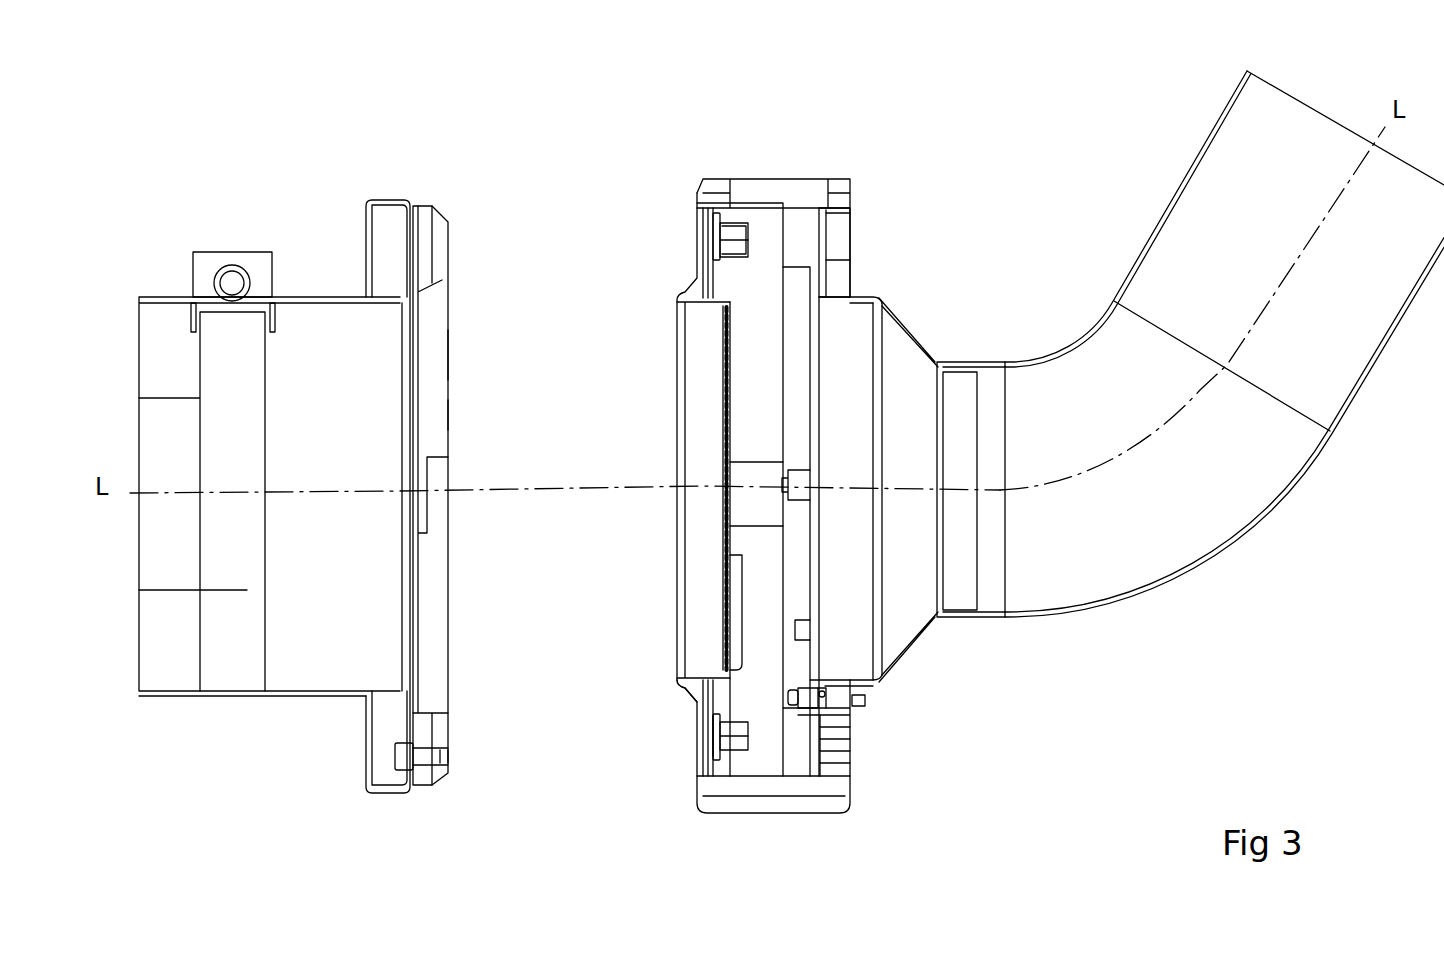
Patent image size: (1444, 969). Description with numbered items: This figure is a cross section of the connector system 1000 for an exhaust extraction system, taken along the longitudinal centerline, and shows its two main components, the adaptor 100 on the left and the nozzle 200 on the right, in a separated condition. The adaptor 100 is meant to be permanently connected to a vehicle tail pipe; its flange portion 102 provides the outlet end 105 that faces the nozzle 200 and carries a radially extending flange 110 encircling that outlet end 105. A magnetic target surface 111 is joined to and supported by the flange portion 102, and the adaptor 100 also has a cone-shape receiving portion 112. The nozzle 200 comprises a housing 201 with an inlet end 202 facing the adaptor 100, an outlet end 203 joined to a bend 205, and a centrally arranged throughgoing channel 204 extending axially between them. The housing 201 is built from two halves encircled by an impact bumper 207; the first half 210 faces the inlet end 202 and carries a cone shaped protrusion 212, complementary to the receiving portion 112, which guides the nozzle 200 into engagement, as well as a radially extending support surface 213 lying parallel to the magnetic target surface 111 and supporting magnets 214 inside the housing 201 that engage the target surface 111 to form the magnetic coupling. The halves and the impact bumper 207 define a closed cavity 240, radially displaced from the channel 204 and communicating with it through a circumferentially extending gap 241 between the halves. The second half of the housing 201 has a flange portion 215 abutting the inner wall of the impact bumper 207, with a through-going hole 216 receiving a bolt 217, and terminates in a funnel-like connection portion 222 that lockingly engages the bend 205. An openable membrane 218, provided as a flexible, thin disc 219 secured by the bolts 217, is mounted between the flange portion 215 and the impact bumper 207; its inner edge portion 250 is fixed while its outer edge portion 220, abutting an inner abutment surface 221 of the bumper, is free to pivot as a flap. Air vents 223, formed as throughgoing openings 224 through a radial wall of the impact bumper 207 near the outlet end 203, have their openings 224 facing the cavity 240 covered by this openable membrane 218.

The connector system 1000 is at (550, 162).
The adaptor 100 is at (319, 203).
The flange portion 102 is at (409, 202).
The radially extending flange 110 is at (421, 210).
The magnetic target surface 111 is at (450, 362).
The outlet end 105 is at (450, 410).
The cone-shape receiving portion 112 is at (425, 711).
The nozzle 200 is at (1159, 632).
The housing 201 is at (787, 177).
The inlet end 202 is at (676, 372).
The outlet end 203 is at (934, 358).
The throughgoing channel 204 is at (700, 453).
The bend 205 is at (1167, 217).
The impact bumper 207 is at (810, 183).
The first half 210 is at (694, 272).
The cone shaped protrusion 212 is at (685, 700).
The radially extending support surface 213 is at (708, 750).
The magnets 214 is at (733, 237).
The flange portion 215 is at (823, 692).
The through-going hole 216 is at (819, 703).
The bolt 217 is at (866, 700).
The openable membrane 218 is at (835, 245).
The flexible, thin disc 219 is at (820, 743).
The outer edge portion 220 is at (838, 760).
The inner abutment surface 221 is at (855, 296).
The funnel-like connection portion 222 is at (884, 325).
The air vents 223 is at (838, 260).
The throughgoing openings 224 is at (927, 198).
The cavity 240 is at (758, 283).
The circumferentially extending gap 241 is at (747, 226).
The inner edge portion 250 is at (828, 684).